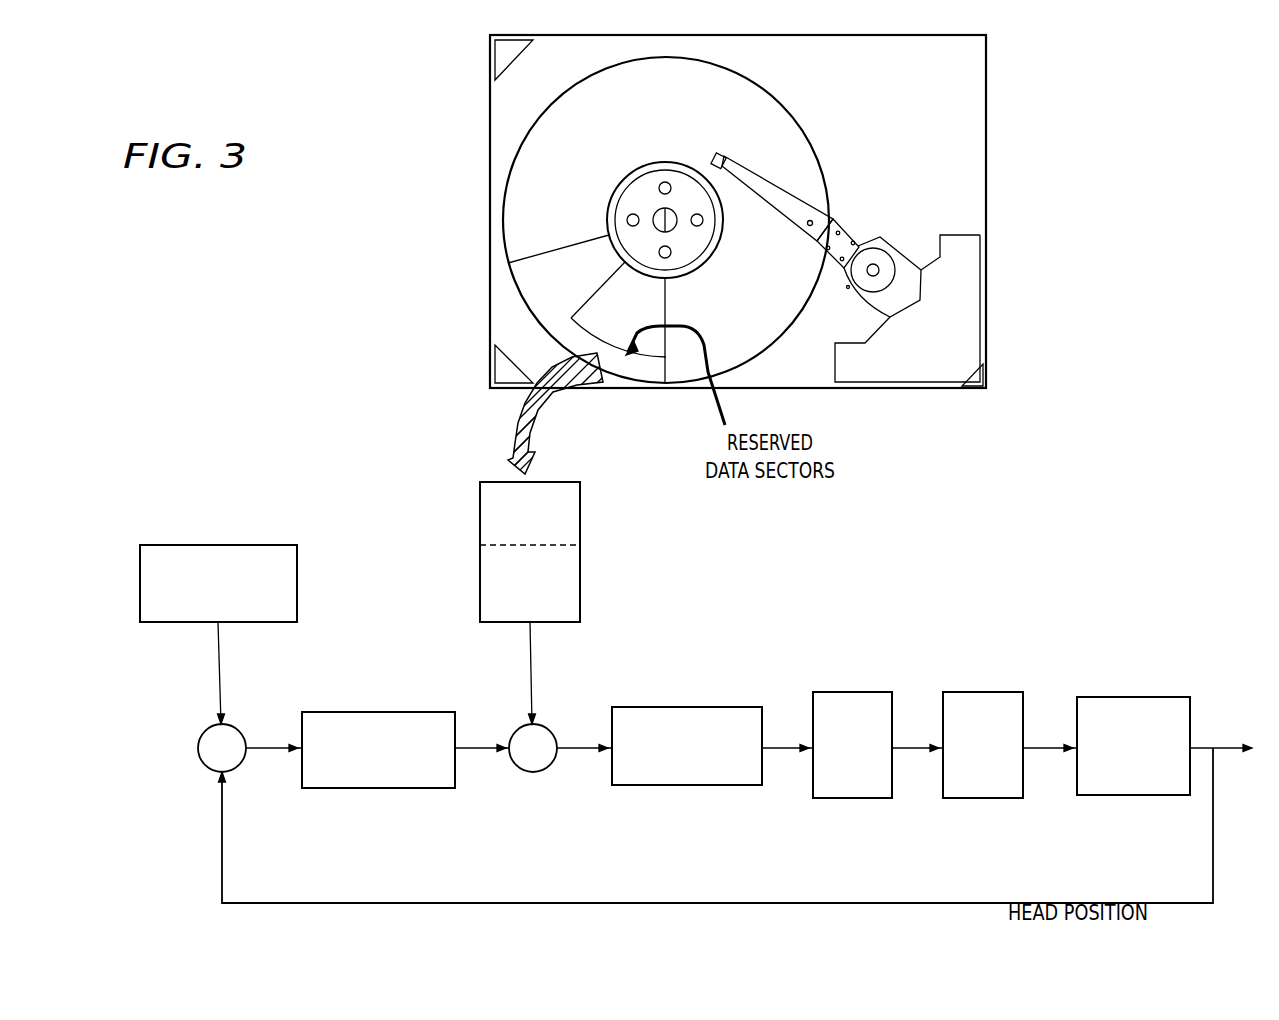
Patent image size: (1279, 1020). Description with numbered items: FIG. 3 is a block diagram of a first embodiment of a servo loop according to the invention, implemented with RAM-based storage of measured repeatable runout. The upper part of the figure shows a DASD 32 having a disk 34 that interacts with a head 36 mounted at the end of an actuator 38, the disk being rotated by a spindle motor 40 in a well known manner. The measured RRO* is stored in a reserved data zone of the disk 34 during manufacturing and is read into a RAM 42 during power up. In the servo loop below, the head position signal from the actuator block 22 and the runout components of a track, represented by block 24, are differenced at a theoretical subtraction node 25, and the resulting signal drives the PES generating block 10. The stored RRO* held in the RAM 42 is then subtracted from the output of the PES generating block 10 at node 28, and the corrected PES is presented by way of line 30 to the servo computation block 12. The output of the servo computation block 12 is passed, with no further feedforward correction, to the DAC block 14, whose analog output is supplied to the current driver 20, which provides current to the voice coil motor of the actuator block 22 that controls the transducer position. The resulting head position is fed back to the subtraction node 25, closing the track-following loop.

The PES generating block 10 is at (390, 712).
The servo computation block 12 is at (707, 707).
The digital-to-analog converter block 14 is at (847, 692).
The current driver 20 is at (982, 692).
The actuator block 22 is at (1145, 697).
The runout components block 24 is at (238, 545).
The subtraction node 25 is at (238, 727).
The summing node 28 is at (550, 728).
The line 30 is at (582, 752).
The DASD 32 is at (988, 97).
The disk 34 is at (770, 93).
The head 36 is at (718, 153).
The actuator 38 is at (863, 227).
The spindle motor 40 is at (647, 162).
The RAM 42 is at (580, 522).